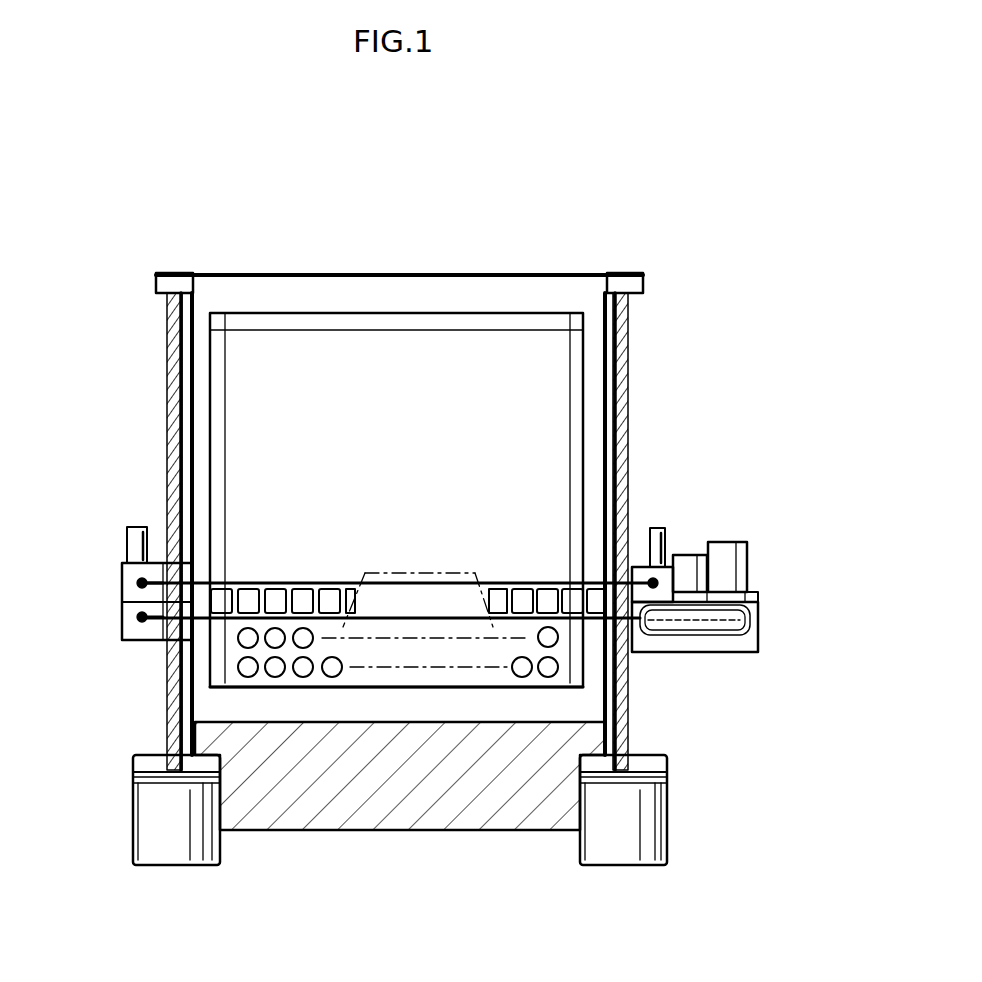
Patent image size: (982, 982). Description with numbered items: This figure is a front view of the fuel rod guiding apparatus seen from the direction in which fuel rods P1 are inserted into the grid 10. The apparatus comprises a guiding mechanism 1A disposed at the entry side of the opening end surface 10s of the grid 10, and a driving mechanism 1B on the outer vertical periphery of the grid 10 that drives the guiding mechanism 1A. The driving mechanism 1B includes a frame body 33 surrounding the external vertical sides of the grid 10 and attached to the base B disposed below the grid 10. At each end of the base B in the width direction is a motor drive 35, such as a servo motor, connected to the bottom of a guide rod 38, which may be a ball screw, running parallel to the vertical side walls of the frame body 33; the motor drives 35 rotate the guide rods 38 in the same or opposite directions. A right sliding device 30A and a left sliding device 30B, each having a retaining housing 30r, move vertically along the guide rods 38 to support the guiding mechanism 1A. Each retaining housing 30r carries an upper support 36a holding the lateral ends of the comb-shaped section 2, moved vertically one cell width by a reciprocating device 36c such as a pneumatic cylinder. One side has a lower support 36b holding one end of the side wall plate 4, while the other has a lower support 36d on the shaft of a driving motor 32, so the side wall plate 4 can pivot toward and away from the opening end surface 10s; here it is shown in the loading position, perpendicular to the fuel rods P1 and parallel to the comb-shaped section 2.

The frame body 33 is at (284, 290).
The guide rod 38 is at (165, 368).
The grid 10 is at (516, 345).
The opening end surface 10s is at (395, 388).
The base B is at (440, 795).
The motor drive 35 is at (178, 848).
The upper support 36a is at (122, 577).
The left sliding device 30B is at (118, 515).
The lower support 36b is at (145, 627).
The reciprocating device 36c is at (136, 527).
The comb-shaped section 2 is at (275, 585).
The guiding mechanism 1A is at (452, 565).
The side wall plate 4 is at (288, 625).
The fuel rod P1 is at (248, 628).
The right sliding device 30A is at (736, 558).
The retaining housing 30r is at (745, 653).
The lower support 36d is at (730, 627).
The driving motor 32 is at (722, 543).
The driving mechanism 1B is at (775, 543).